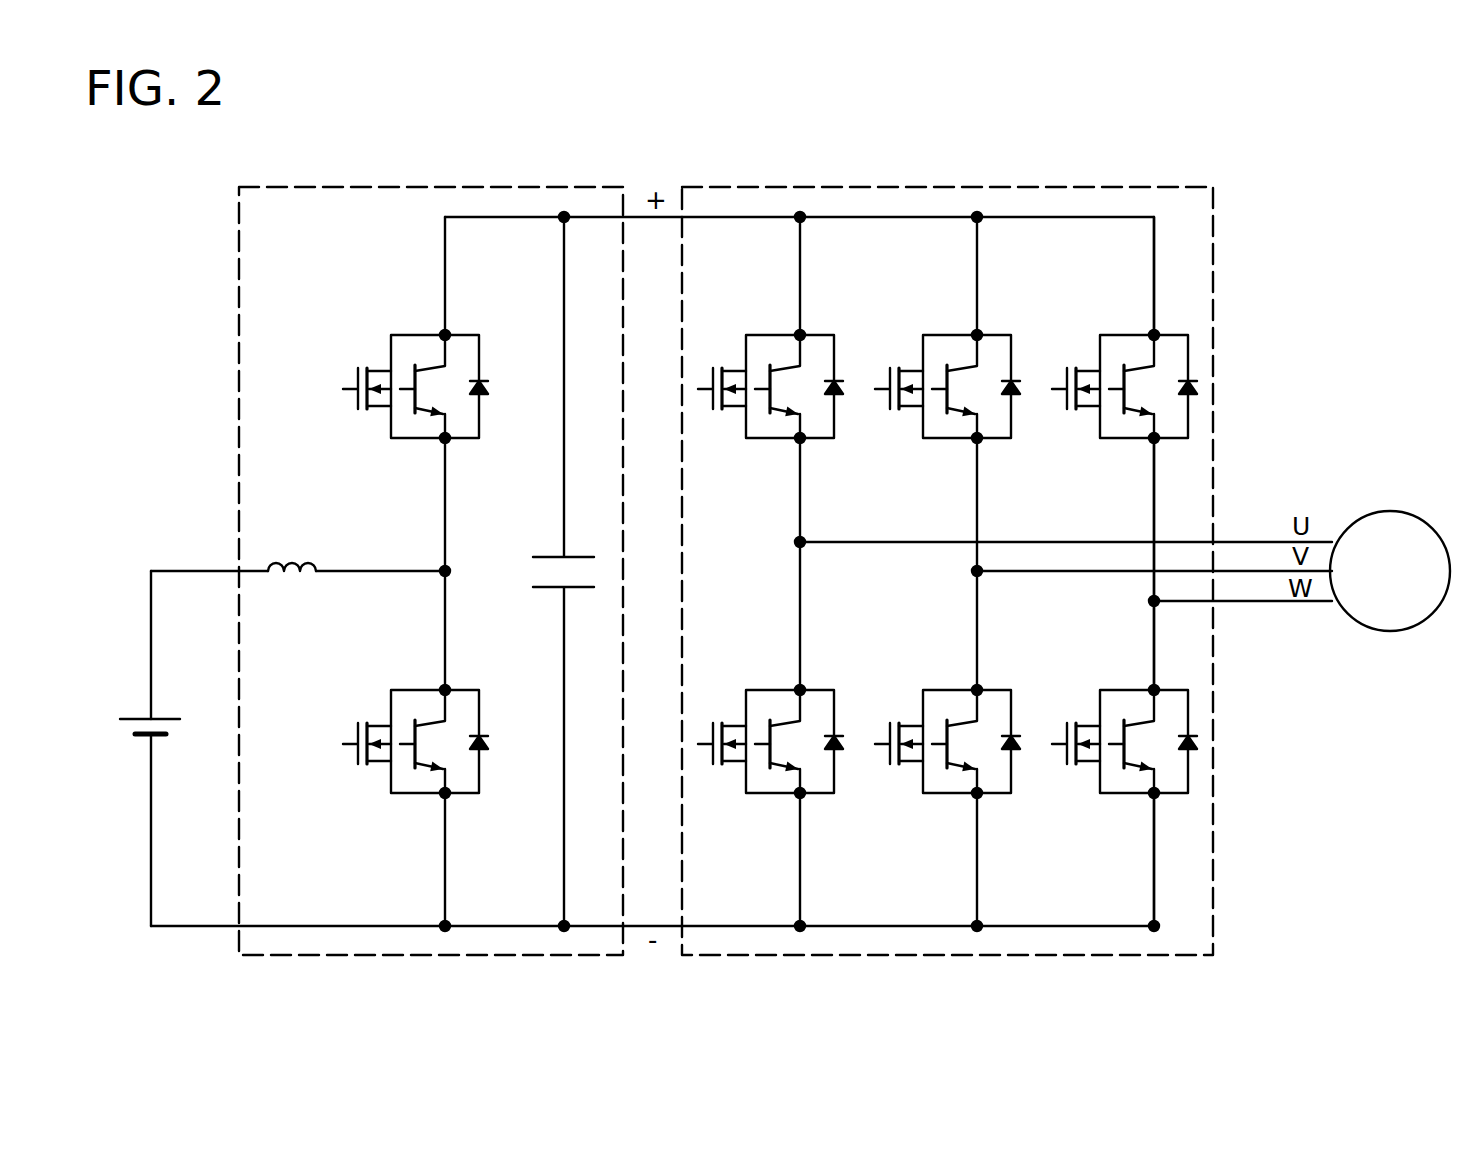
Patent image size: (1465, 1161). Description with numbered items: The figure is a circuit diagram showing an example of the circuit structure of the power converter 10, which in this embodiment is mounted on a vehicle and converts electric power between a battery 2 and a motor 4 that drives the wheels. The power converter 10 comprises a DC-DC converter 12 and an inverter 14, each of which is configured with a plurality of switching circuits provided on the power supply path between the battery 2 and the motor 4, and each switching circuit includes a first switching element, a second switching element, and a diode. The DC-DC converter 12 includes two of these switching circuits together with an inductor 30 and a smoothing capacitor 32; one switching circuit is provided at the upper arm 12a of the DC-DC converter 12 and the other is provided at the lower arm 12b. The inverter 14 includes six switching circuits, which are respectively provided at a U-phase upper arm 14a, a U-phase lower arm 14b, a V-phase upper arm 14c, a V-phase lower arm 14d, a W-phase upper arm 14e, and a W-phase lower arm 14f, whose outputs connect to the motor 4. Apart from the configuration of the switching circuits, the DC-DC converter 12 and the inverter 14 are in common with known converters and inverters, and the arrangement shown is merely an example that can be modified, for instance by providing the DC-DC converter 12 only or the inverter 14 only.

The battery 2 is at (132, 717).
The motor 4 is at (1400, 512).
The power converter 10 is at (1278, 215).
The DC-DC converter 12 is at (248, 187).
The upper arm 12a is at (445, 260).
The lower arm 12b is at (445, 867).
The inverter 14 is at (1182, 185).
The U-phase upper arm 14a is at (800, 277).
The U-phase lower arm 14b is at (800, 867).
The V-phase upper arm 14c is at (977, 277).
The V-phase lower arm 14d is at (977, 867).
The W-phase upper arm 14e is at (1154, 277).
The W-phase lower arm 14f is at (1154, 867).
The inductor 30 is at (305, 555).
The smoothing capacitor 32 is at (545, 555).